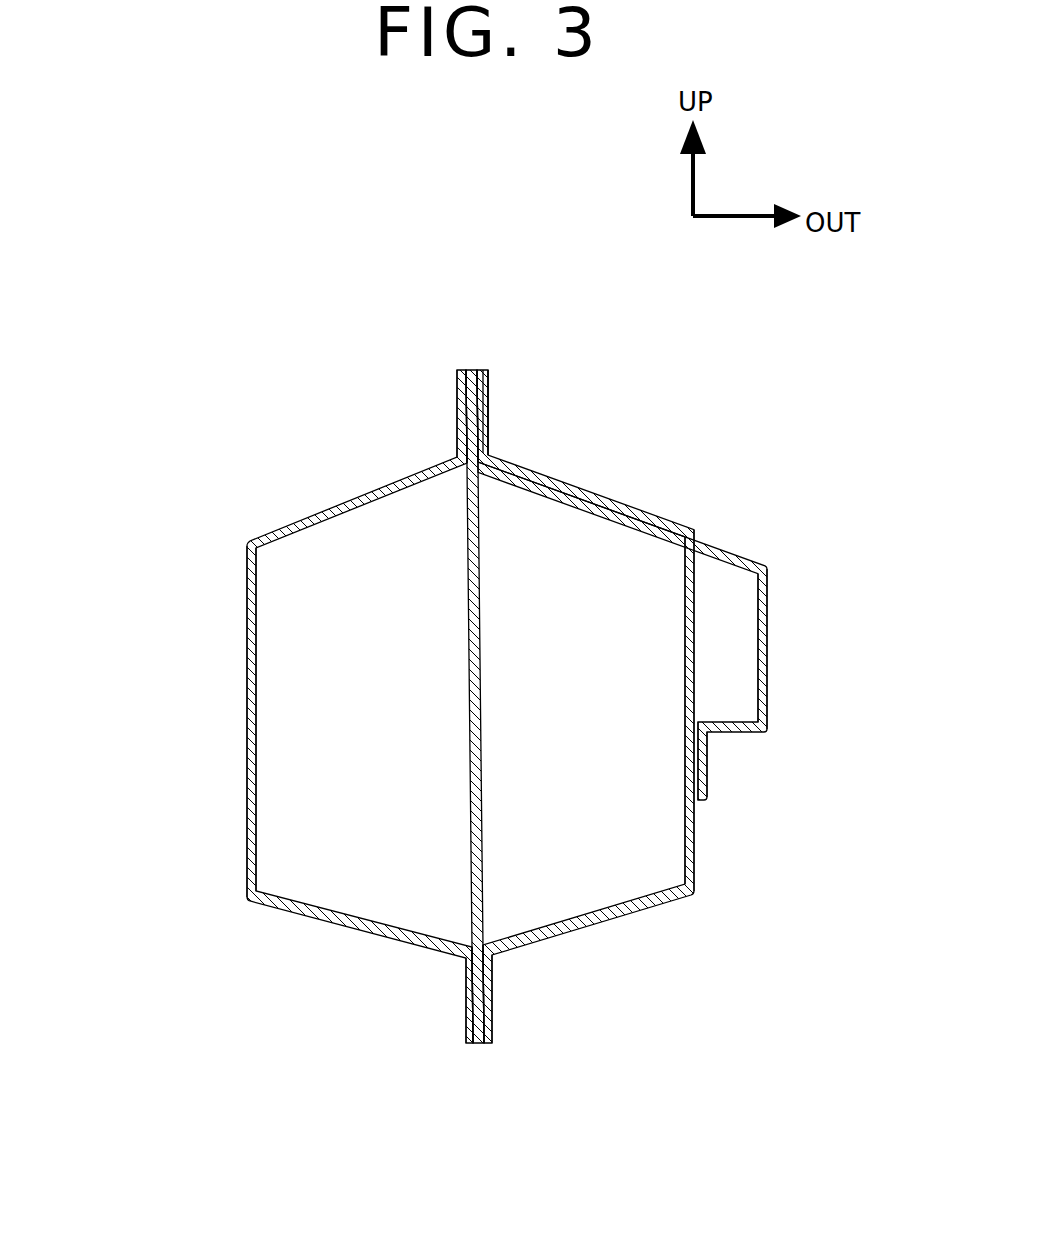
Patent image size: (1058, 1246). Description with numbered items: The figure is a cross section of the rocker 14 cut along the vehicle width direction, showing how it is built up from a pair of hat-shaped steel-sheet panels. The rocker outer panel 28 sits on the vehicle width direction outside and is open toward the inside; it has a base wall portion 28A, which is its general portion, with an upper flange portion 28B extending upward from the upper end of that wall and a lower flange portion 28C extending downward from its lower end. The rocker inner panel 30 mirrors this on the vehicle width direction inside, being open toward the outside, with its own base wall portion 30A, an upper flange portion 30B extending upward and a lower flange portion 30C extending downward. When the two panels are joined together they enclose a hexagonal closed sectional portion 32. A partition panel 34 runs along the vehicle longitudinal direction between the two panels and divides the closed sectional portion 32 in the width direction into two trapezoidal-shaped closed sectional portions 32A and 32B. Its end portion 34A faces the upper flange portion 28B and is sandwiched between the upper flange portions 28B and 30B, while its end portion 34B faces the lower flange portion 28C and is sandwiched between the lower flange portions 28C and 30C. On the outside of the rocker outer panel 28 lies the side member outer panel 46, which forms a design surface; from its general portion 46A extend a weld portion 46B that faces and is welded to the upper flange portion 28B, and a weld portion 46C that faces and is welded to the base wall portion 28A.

The rocker 14 is at (301, 1031).
The rocker outer panel 28 is at (701, 867).
The base wall portion 28A is at (696, 835).
The upper flange portion 28B is at (482, 367).
The lower flange portion 28C is at (493, 1020).
The rocker inner panel 30 is at (249, 795).
The base wall portion 30A is at (247, 732).
The upper flange portion 30B is at (460, 411).
The lower flange portion 30C is at (466, 1019).
The closed sectional portion 32 is at (477, 716).
The closed sectional portion 32A is at (609, 714).
The closed sectional portion 32B is at (406, 714).
The partition panel 34 is at (479, 597).
The end portion 34A is at (467, 367).
The end portion 34B is at (478, 1045).
The side member outer panel 46 is at (706, 528).
The general portion 46A is at (769, 606).
The weld portion 46B is at (489, 411).
The weld portion 46C is at (709, 770).